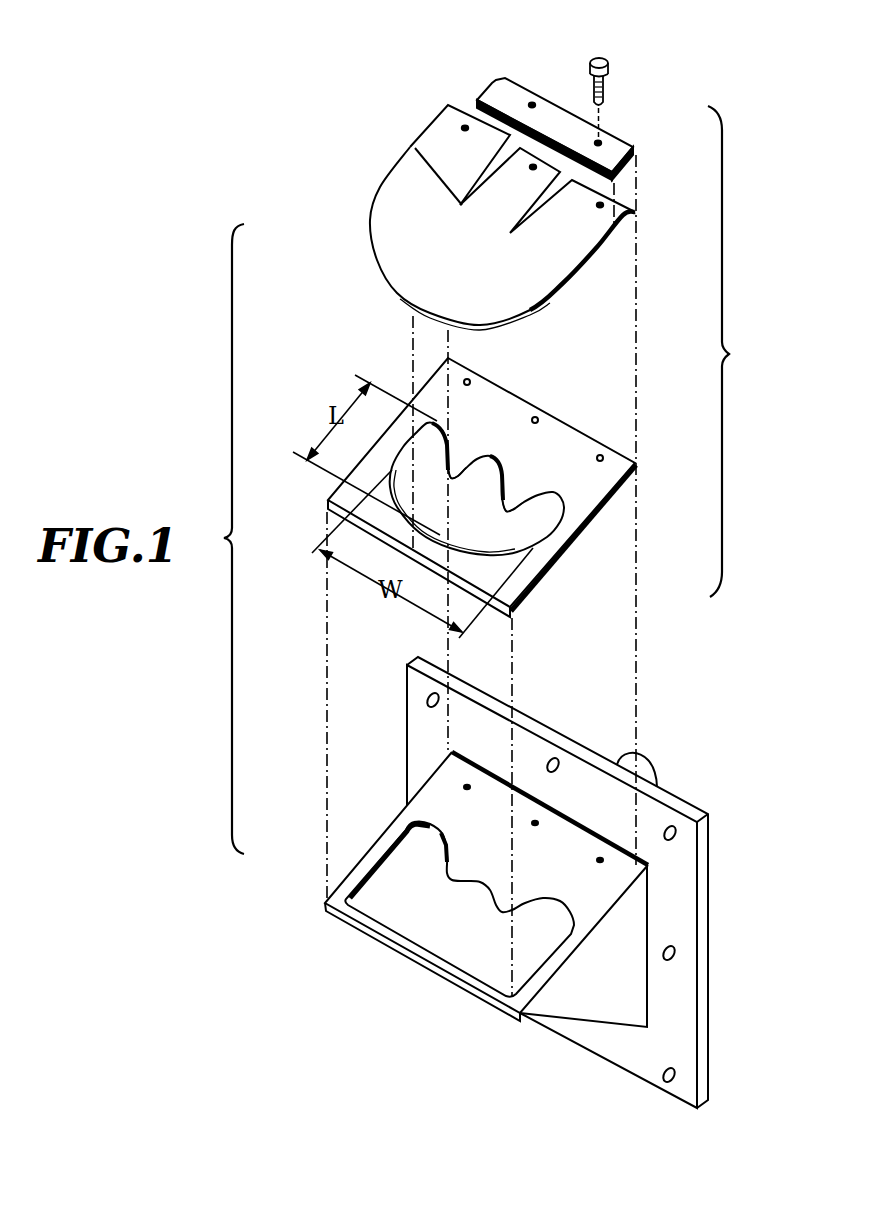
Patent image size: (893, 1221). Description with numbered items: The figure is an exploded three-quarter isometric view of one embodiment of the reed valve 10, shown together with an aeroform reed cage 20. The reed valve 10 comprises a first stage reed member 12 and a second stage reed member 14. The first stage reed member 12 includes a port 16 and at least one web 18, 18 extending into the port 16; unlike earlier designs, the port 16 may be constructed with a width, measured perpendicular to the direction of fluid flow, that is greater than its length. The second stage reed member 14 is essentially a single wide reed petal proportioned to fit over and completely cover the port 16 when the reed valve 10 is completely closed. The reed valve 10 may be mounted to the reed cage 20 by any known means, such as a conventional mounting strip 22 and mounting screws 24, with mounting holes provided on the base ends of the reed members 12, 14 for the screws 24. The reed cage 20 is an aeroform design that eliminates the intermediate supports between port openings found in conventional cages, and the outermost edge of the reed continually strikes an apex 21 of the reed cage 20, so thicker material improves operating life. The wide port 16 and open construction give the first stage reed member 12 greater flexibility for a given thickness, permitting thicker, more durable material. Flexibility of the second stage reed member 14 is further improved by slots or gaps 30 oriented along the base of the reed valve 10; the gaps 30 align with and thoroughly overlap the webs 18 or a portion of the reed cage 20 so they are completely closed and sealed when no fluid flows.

The reed valve 10 is at (786, 370).
The first stage reed member 12 is at (517, 583).
The second stage reed member 14 is at (432, 123).
The port 16 is at (550, 540).
The web 18 is at (457, 476).
The reed cage 20 is at (698, 872).
The apex 21 is at (375, 938).
The mounting strip 22 is at (634, 147).
The mounting screws 24 is at (608, 72).
The gaps 30 is at (410, 148).